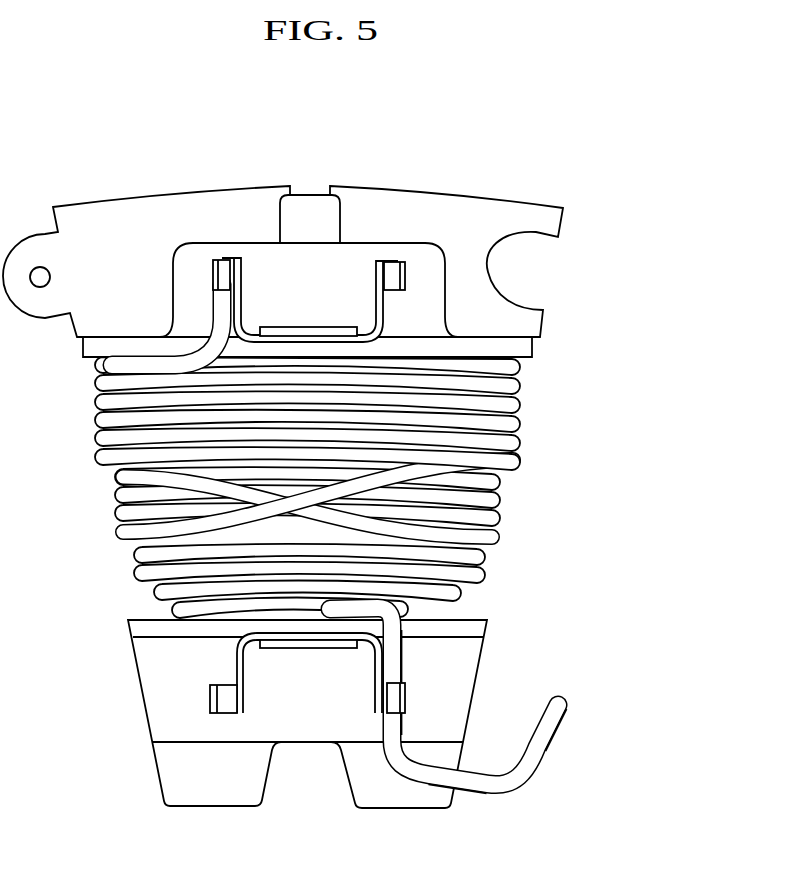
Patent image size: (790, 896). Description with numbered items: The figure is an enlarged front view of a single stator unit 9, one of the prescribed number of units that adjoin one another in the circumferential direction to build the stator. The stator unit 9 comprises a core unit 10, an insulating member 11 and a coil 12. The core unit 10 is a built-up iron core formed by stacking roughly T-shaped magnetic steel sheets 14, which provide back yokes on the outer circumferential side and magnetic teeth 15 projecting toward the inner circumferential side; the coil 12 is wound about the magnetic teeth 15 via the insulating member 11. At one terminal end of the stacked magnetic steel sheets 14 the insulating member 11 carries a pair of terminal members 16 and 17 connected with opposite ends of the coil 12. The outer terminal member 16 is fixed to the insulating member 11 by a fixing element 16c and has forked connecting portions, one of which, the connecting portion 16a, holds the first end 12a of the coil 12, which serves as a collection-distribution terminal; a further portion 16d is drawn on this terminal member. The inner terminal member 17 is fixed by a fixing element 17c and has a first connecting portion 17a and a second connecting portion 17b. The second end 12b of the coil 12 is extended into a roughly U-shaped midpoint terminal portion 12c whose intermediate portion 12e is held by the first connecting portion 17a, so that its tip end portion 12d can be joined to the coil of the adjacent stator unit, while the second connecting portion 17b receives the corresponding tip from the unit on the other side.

The stator unit 9 is at (329, 508).
The core unit 10 is at (283, 236).
The magnetic steel sheets 14 is at (467, 222).
The insulating member 11 is at (433, 293).
The coil 12 is at (510, 463).
The first end of the coil 12a is at (219, 303).
The second end of the coil 12b is at (490, 742).
The midpoint terminal portion 12c is at (480, 773).
The tip end portion 12d is at (552, 727).
The intermediate portion 12e is at (397, 727).
The magnetic teeth 15 is at (433, 800).
The outer terminal member 16 is at (248, 327).
The connecting portion 16a is at (217, 268).
The fixing element 16c is at (310, 330).
The upper terminal tab 16d is at (392, 266).
The inner terminal member 17 is at (245, 648).
The first connecting portion 17a is at (398, 700).
The second connecting portion 17b is at (223, 708).
The fixing element 17c is at (310, 643).